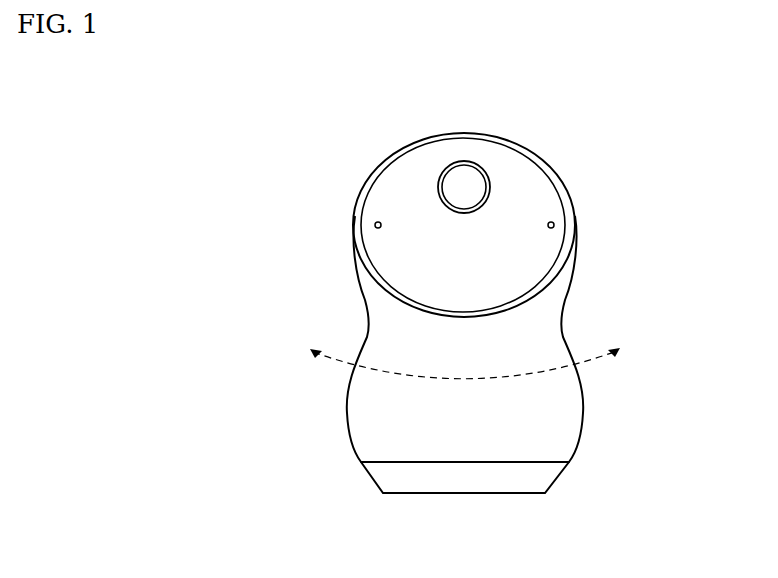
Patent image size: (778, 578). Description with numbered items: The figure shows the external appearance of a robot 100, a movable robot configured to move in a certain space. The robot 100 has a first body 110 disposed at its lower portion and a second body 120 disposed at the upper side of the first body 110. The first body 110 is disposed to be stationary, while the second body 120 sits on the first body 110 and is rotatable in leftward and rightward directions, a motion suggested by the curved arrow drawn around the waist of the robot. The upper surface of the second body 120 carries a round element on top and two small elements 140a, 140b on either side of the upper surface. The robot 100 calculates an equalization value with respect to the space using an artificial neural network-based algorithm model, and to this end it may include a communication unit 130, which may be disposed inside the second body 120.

The robot 100 is at (418, 82).
The first body 110 is at (551, 473).
The second body 120 is at (551, 304).
The communication unit 130 is at (488, 172).
The first microphone 140a is at (375, 225).
The second microphone 140b is at (554, 225).